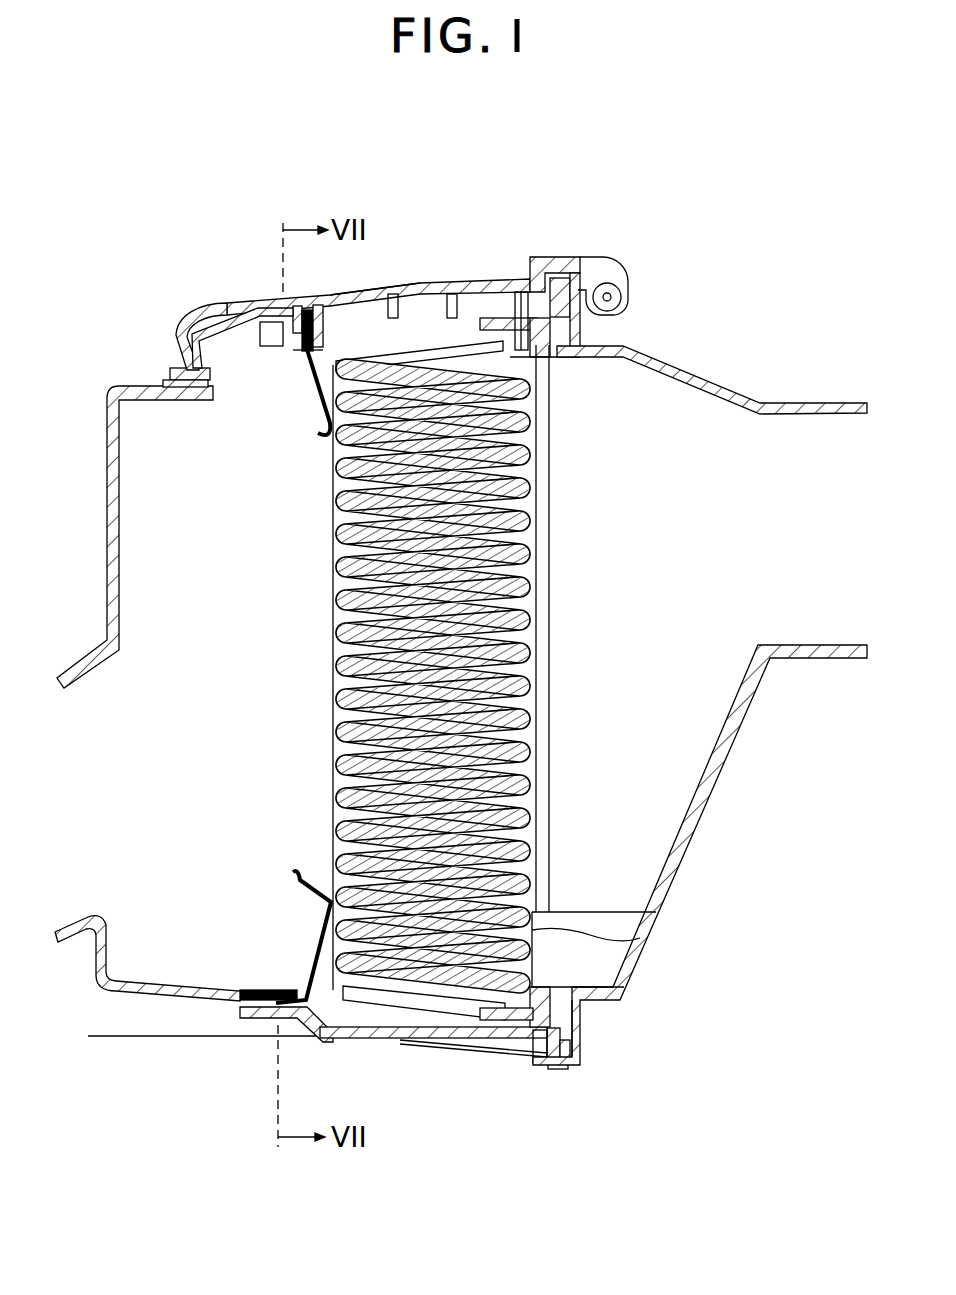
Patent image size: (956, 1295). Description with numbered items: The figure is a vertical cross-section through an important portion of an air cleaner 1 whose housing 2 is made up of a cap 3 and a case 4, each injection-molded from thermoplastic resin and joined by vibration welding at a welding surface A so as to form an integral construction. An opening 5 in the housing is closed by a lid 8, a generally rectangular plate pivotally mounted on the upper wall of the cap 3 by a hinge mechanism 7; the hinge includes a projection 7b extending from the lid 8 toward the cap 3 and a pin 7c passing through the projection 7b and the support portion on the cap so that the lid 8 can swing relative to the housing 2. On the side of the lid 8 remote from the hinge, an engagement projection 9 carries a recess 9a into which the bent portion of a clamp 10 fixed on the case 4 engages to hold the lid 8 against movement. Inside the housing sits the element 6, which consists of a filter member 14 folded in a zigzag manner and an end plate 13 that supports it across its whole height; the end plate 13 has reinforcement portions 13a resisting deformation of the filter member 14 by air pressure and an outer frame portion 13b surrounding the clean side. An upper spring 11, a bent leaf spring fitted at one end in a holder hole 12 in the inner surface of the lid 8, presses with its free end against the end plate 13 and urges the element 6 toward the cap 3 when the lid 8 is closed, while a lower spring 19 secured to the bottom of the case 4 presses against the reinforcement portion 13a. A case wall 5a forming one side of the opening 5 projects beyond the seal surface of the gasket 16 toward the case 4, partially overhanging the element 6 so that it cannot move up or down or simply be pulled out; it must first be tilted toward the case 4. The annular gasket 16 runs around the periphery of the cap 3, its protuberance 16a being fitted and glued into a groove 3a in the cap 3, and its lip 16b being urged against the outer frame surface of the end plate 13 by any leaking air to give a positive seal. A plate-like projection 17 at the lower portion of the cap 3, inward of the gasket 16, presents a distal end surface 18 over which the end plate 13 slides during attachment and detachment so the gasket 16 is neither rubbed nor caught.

The air cleaner 1 is at (137, 294).
The housing 2 is at (727, 390).
The cap 3 is at (672, 877).
The groove 3a is at (573, 1007).
The case 4 is at (398, 1043).
The opening 5 is at (423, 312).
The case wall 5a is at (518, 300).
The element 6 is at (522, 503).
The hinge mechanism 7 is at (657, 273).
The projection 7b is at (600, 273).
The pin 7c is at (628, 300).
The lid 8 is at (377, 290).
The engagement projection 9 is at (233, 308).
The recess 9a is at (188, 310).
The clamp 10 is at (177, 330).
The upper spring 11 is at (317, 400).
The holder hole 12 is at (293, 343).
The end plate 13 is at (335, 617).
The reinforcement portion 13a is at (353, 1010).
The outer frame portion 13b is at (480, 1047).
The filter member 14 is at (520, 652).
The gasket 16 is at (552, 1063).
The protuberance 16a is at (574, 1040).
The lip 16b is at (510, 1020).
The projection 17 is at (592, 965).
The distal end surface 18 is at (540, 930).
The lower spring 19 is at (318, 940).
The welding surface A is at (580, 268).